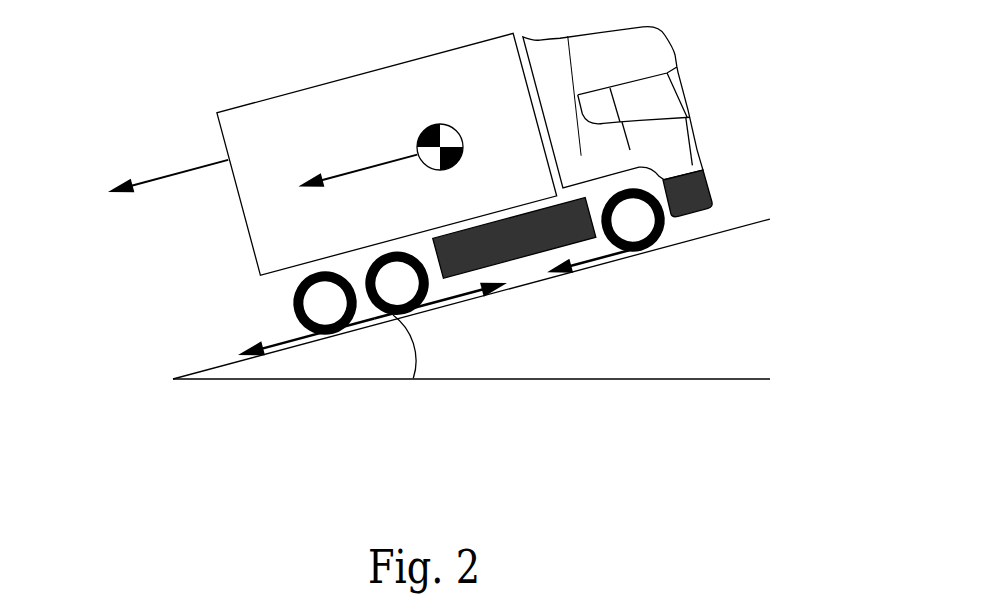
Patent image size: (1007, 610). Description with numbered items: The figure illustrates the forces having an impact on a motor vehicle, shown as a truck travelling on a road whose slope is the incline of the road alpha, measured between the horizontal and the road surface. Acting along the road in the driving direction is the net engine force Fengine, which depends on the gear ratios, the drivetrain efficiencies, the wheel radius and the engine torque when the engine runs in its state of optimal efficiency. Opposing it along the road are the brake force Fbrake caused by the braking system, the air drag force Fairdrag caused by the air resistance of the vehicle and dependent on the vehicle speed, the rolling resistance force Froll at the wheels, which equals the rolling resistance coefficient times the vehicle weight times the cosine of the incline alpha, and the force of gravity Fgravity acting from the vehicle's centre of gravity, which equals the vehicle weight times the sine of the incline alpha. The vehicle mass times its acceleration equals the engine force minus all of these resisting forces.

The air drag force Fairdrag is at (146, 158).
The force of gravity Fgravity is at (362, 148).
The brake force Fbrake is at (273, 324).
The net engine force Fengine is at (490, 306).
The rolling resistance force Froll is at (611, 272).
The incline of the road alpha is at (430, 346).